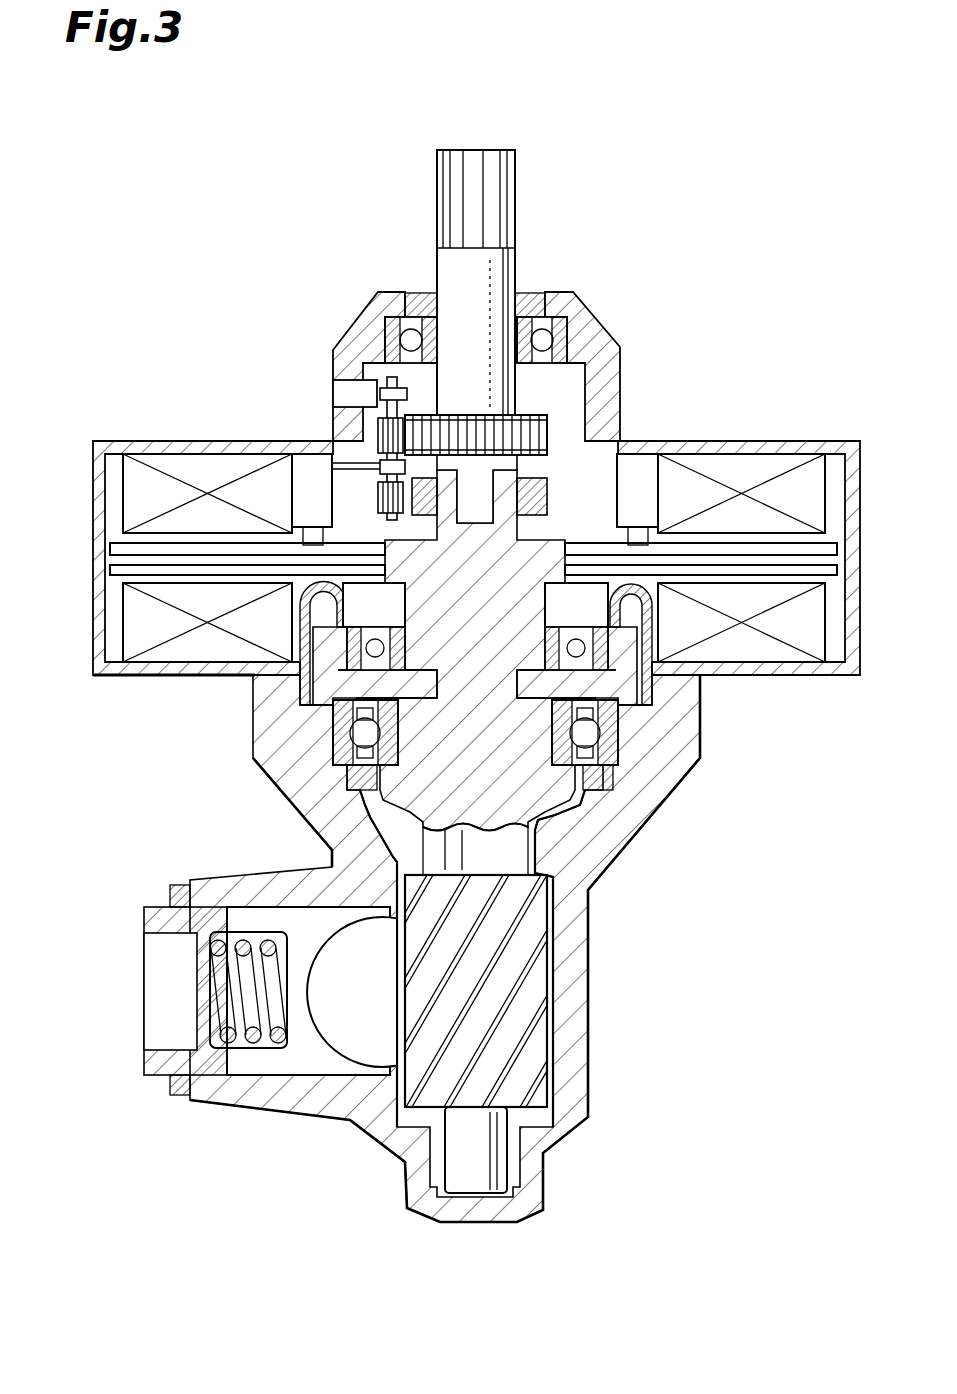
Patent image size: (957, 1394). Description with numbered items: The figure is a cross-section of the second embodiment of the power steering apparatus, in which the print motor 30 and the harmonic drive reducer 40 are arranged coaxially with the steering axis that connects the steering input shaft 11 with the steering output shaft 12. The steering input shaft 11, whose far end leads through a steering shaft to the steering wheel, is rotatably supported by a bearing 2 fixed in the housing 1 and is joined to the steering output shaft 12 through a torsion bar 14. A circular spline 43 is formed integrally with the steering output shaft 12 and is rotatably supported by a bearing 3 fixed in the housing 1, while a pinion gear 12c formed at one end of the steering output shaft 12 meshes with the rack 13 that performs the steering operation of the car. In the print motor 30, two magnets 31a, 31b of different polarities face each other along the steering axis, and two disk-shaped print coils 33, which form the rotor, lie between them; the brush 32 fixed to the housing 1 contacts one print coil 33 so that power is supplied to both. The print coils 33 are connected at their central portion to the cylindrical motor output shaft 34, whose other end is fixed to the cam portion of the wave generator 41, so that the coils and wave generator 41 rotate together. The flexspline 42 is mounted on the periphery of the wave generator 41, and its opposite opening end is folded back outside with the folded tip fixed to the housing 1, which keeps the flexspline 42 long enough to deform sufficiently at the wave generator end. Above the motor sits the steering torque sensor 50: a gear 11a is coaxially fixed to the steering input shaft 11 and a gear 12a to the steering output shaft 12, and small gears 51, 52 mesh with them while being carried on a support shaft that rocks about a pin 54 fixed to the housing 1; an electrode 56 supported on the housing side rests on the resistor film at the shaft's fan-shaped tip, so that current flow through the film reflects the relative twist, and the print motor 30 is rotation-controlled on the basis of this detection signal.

The housing 1 is at (135, 441).
The bearing 2 is at (563, 322).
The bearing 3 is at (340, 748).
The steering input shaft 11 is at (440, 256).
The gear 11a is at (535, 416).
The steering output shaft 12 is at (542, 793).
The gear 12a is at (548, 510).
The pinion gear 12c is at (525, 1028).
The rack 13 is at (345, 1045).
The torsion bar 14 is at (480, 487).
The print motor 30 is at (115, 520).
The magnet 31a is at (793, 462).
The magnet 31b is at (790, 655).
The brush 32 is at (300, 458).
The print coil 33 is at (110, 570).
The motor output shaft 34 is at (558, 625).
The harmonic drive reducer 40 is at (268, 705).
The wave generator 41 is at (395, 625).
The flexspline 42 is at (660, 690).
The circular spline 43 is at (683, 768).
The steering torque sensor 50 is at (315, 378).
The small gear 51 is at (378, 428).
The small gear 52 is at (383, 488).
The pin 54 is at (380, 462).
The electrode 56 is at (345, 380).